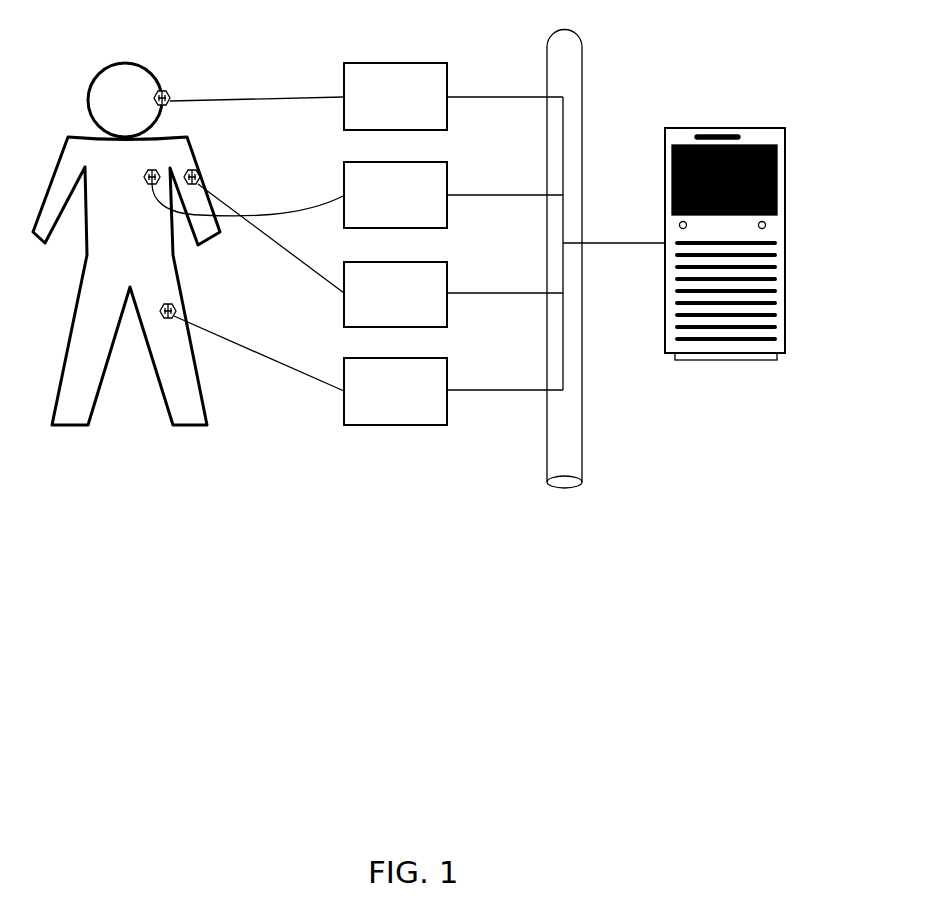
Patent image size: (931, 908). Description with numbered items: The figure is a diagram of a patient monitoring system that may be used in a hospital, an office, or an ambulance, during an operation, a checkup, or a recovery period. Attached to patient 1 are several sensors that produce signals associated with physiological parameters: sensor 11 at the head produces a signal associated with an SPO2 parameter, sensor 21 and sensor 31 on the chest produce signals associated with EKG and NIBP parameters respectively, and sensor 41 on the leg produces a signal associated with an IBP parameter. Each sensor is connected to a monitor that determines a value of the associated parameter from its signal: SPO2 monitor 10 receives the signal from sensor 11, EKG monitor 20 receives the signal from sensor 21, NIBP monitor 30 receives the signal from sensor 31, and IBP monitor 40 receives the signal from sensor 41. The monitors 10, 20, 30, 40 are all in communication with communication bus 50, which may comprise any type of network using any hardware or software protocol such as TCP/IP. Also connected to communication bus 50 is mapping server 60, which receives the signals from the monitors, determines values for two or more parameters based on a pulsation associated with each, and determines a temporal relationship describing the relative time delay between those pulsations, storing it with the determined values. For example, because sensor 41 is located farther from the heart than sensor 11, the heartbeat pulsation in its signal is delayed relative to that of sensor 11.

The patient 1 is at (137, 63).
The sensor 11 is at (167, 90).
The sensor 21 is at (144, 177).
The sensor 31 is at (201, 177).
The sensor 41 is at (178, 308).
The SPO2 monitor 10 is at (418, 123).
The EKG monitor 20 is at (418, 223).
The NIBP monitor 30 is at (418, 320).
The IBP monitor 40 is at (418, 420).
The communication bus 50 is at (560, 28).
The mapping server 60 is at (723, 127).